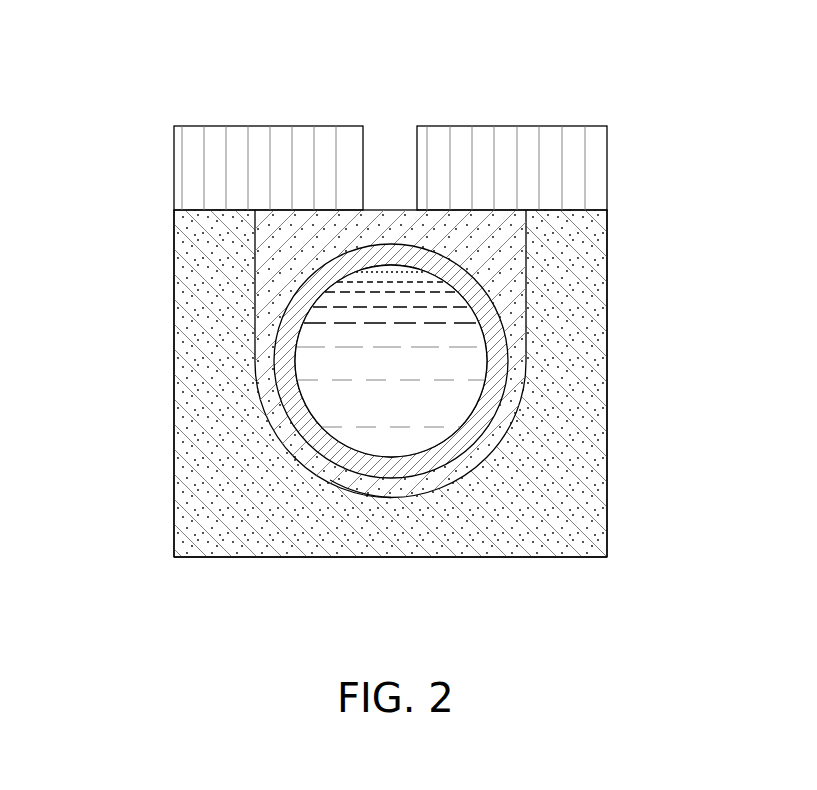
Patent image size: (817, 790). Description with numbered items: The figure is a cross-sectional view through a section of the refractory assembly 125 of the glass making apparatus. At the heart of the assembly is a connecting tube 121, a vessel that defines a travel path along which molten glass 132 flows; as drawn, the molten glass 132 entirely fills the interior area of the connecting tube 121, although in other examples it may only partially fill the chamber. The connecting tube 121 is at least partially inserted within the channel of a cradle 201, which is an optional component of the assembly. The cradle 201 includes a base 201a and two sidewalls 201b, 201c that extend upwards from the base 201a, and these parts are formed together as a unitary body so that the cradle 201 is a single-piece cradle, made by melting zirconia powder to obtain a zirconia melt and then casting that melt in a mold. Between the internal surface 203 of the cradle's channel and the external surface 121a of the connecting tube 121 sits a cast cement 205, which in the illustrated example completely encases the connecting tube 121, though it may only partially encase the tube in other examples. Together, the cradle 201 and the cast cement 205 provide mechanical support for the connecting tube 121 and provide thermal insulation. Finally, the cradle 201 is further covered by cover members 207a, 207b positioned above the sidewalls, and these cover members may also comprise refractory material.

The refractory assembly 125 is at (641, 136).
The connecting tube 121 is at (401, 246).
The external surface of the connecting tube 121a is at (338, 488).
The molten glass 132 is at (457, 320).
The cradle 201 is at (642, 449).
The base 201a is at (389, 557).
The sidewall 201b is at (600, 386).
The sidewall 201c is at (182, 386).
The internal surface of the channel 203 is at (264, 252).
The cast cement 205 is at (452, 472).
The cover member 207a is at (588, 126).
The cover member 207b is at (344, 126).